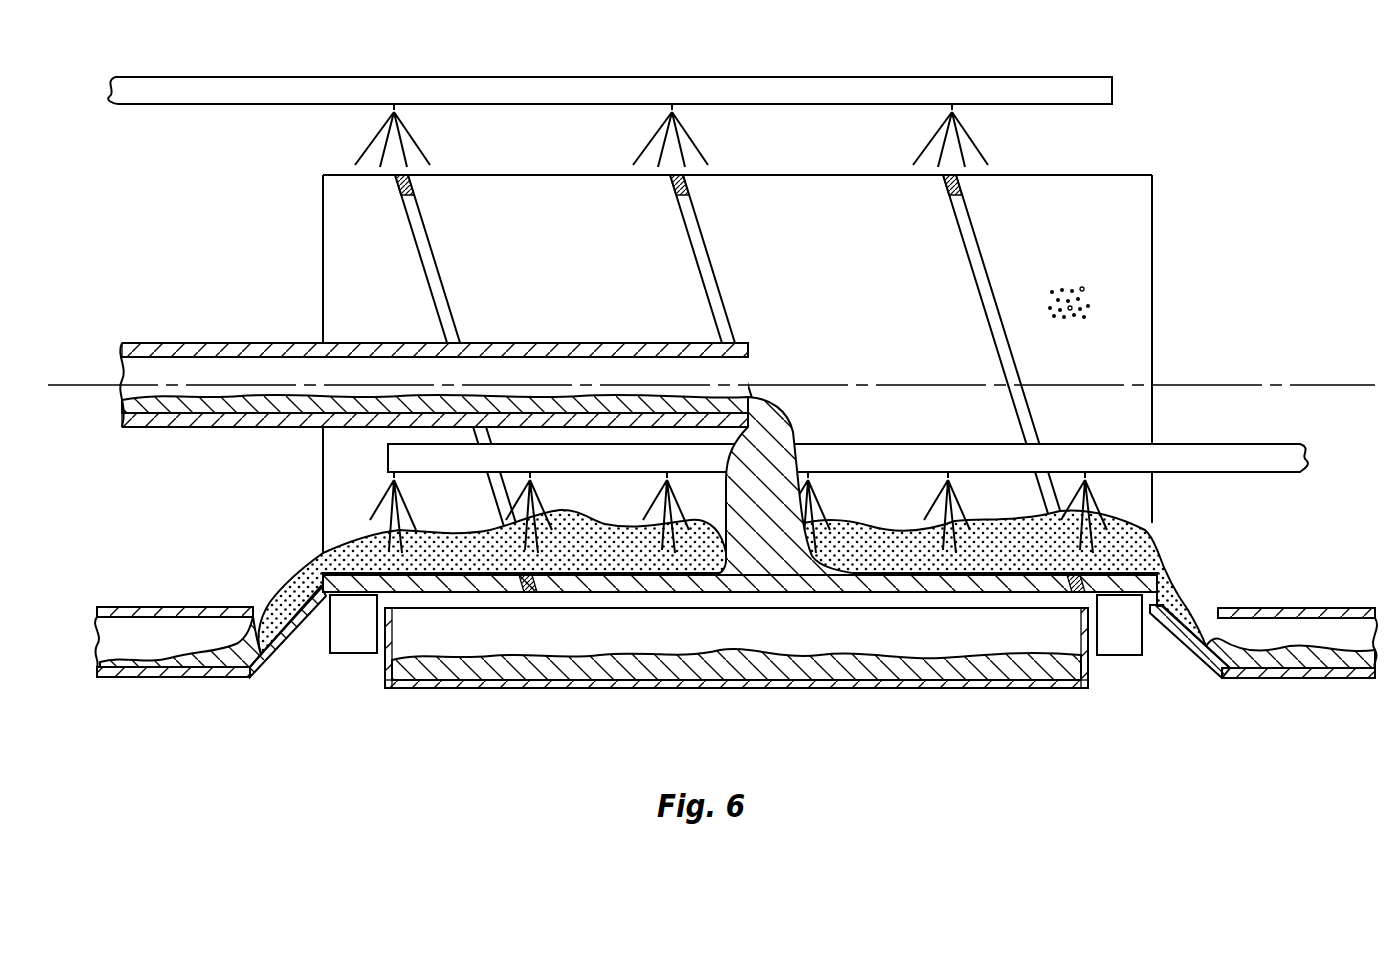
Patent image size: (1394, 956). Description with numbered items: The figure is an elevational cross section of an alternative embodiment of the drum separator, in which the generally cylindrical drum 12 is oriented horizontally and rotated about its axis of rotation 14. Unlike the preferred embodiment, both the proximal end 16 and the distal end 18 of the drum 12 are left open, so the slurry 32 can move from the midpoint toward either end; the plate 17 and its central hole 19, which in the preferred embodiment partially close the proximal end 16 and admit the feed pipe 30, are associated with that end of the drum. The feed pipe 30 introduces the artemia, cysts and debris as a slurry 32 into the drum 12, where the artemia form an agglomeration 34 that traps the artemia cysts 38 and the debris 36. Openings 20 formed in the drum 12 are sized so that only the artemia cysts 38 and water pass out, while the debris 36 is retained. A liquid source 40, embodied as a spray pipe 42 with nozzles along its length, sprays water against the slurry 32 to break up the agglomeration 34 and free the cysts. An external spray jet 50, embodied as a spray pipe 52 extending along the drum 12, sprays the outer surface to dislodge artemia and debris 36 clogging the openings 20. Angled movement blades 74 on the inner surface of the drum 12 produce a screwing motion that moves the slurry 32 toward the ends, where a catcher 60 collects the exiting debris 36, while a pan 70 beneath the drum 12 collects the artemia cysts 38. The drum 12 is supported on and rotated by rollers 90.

The drum 12 is at (734, 333).
The axis of rotation 14 is at (1272, 385).
The proximal end 16 is at (323, 190).
The plate 17 is at (323, 243).
The distal end 18 is at (1153, 197).
The hole 19 is at (322, 337).
The openings 20 is at (1085, 297).
The feed pipe 30 is at (170, 343).
The slurry 32 is at (128, 405).
The agglomeration 34 is at (703, 560).
The debris 36 is at (300, 578).
The artemia cysts 38 is at (492, 672).
The liquid source 40 is at (1107, 488).
The spray pipe 42 is at (1275, 455).
The external spray jet 50 is at (967, 125).
The spray pipe 52 is at (768, 86).
The catcher 60 is at (1297, 607).
The pan 70 is at (1015, 690).
The movement blades 74 is at (405, 210).
The rollers 90 is at (348, 654).